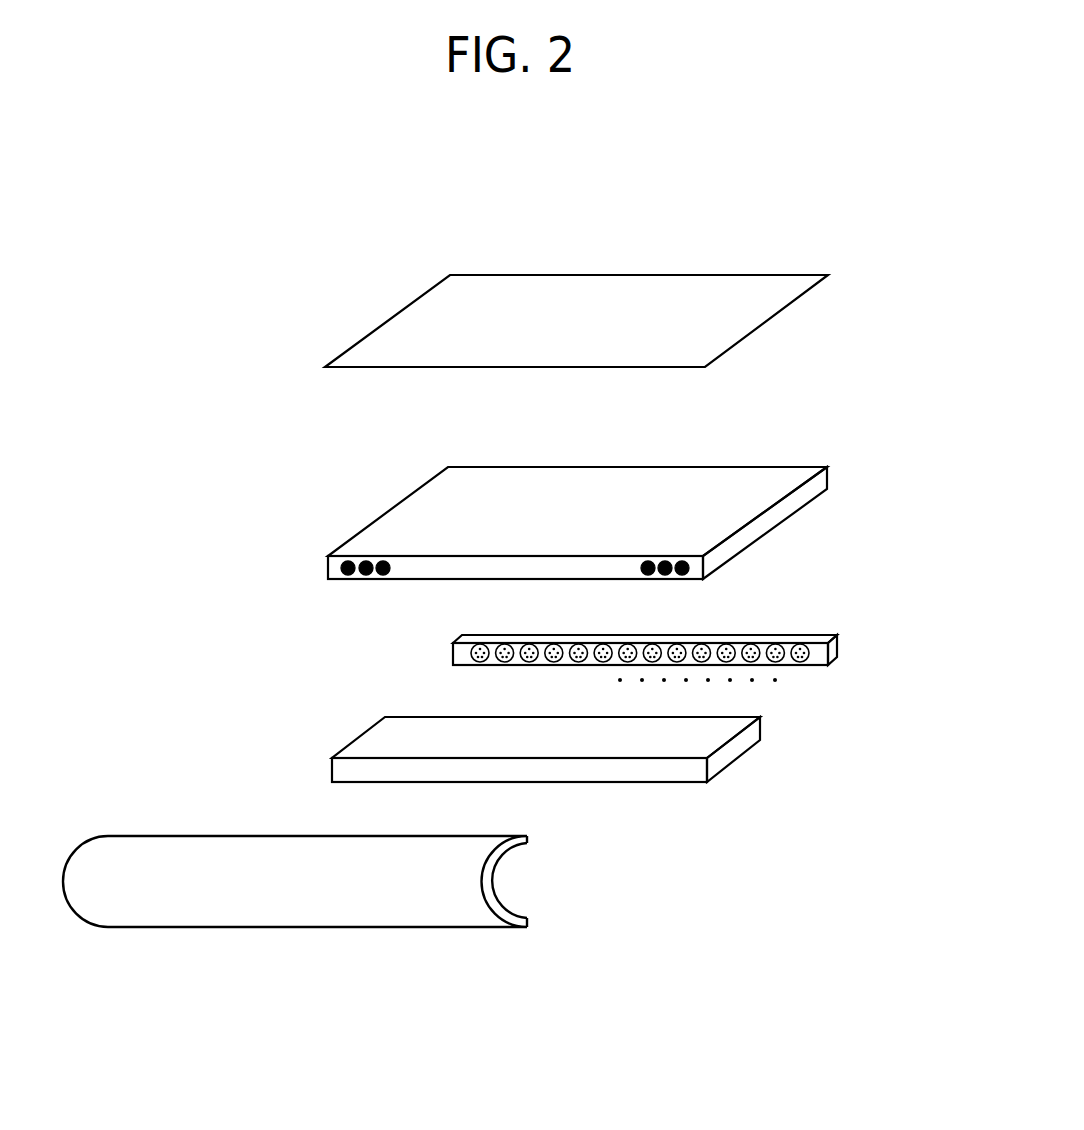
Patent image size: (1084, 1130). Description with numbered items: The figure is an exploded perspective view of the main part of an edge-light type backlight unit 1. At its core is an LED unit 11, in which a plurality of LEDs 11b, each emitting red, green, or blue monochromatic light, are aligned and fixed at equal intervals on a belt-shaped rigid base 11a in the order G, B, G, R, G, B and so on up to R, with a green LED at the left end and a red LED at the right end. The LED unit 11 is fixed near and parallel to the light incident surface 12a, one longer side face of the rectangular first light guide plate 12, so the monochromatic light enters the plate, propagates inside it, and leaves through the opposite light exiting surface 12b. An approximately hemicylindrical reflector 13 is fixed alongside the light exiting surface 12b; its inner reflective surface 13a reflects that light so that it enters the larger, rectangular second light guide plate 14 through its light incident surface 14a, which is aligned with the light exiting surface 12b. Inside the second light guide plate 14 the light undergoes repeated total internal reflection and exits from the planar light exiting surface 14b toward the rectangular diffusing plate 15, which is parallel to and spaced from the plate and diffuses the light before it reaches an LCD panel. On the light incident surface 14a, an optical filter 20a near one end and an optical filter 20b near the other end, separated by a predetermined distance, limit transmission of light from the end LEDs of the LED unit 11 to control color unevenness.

The backlight unit 1 is at (667, 156).
The diffusing plate 15 is at (797, 290).
The second light guide plate 14 is at (756, 466).
The light exiting surface 14b is at (445, 510).
The light incident surface 14a is at (468, 569).
The optical filter 20a is at (336, 569).
The optical filter 20b is at (634, 568).
The LED unit 11 is at (438, 657).
The base 11a is at (820, 640).
The LED 11b is at (795, 662).
The first light guide plate 12 is at (720, 712).
The light exiting surface 12b is at (482, 770).
The light incident surface 12a is at (764, 723).
The reflector 13 is at (428, 900).
The reflective surface 13a is at (508, 901).